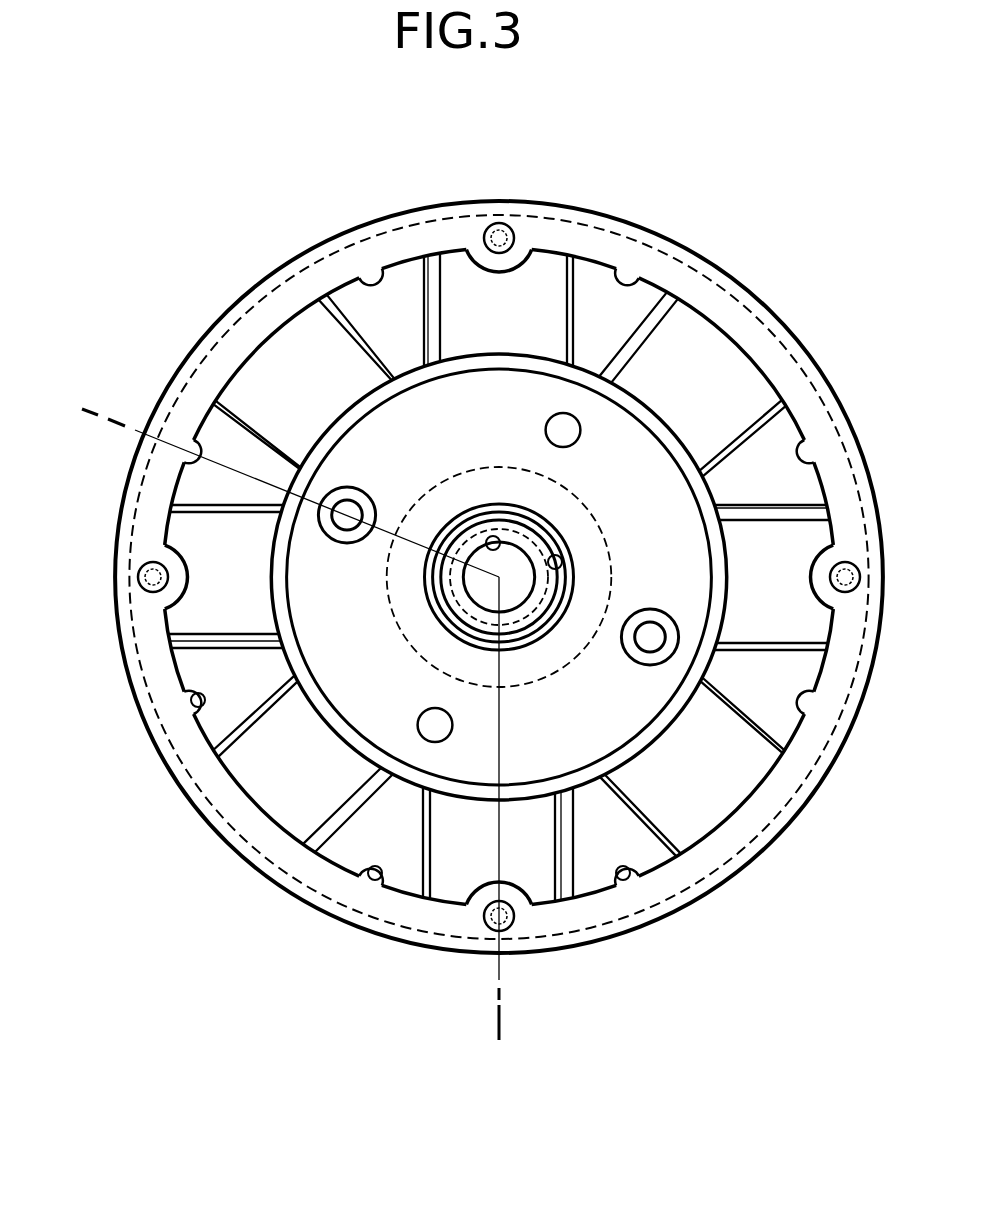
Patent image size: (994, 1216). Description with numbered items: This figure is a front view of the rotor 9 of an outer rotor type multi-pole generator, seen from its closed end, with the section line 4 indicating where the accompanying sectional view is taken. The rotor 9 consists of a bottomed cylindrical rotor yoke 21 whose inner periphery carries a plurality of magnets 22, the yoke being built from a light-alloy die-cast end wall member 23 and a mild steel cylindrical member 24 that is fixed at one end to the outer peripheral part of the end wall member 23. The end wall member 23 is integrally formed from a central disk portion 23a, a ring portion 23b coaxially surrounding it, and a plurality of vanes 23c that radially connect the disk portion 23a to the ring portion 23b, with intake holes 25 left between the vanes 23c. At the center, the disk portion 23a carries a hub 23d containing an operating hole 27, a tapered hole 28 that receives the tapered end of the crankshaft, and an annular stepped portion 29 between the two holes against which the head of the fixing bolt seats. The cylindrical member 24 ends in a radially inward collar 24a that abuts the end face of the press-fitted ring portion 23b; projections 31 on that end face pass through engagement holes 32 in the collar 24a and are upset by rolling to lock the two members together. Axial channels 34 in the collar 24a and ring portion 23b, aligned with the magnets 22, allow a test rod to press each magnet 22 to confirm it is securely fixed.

The section line 4- 4 is at (78, 438).
The rotor 9 is at (383, 198).
The rotor yoke 21 is at (263, 207).
The magnets 22 is at (345, 292).
The end wall member 23 is at (277, 270).
The disk portion 23a is at (417, 405).
The ring portion 23b is at (607, 228).
The vanes 23c is at (638, 382).
The hub 23d is at (493, 468).
The cylindrical member 24 is at (218, 318).
The collar 24a is at (773, 365).
The intake holes 25 is at (775, 442).
The operating hole 27 is at (573, 573).
The tapered hole 28 is at (480, 552).
The annular stepped portion 29 is at (532, 622).
The projections 31 is at (493, 225).
The engagement holes 32 is at (513, 252).
The channels 34 is at (183, 712).